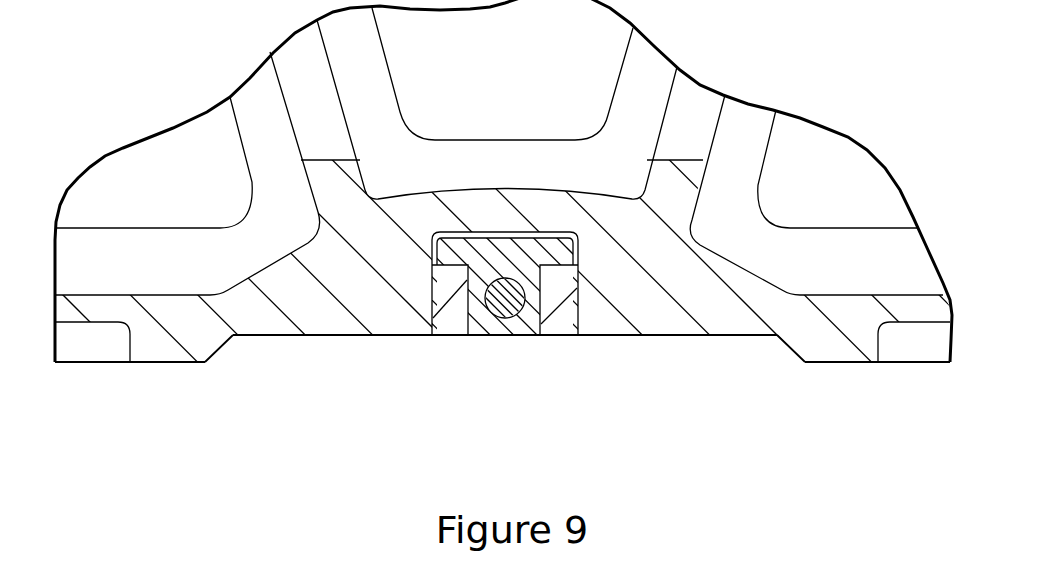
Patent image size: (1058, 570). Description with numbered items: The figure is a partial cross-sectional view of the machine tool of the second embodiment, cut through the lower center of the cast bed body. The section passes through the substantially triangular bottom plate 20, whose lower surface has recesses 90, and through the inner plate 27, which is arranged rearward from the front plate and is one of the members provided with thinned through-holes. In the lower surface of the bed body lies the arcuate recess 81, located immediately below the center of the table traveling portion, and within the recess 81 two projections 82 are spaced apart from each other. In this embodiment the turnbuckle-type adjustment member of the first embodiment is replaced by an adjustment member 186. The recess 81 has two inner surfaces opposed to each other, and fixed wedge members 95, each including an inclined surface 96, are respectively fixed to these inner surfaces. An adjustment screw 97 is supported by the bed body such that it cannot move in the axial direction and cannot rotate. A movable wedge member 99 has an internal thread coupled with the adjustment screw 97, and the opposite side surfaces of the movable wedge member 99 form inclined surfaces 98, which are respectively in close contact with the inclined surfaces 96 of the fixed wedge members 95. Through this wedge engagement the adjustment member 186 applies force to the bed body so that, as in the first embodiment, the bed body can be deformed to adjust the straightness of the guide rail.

The bottom plate 20 is at (167, 363).
The inner plate 27 is at (853, 318).
The recess 81 is at (502, 222).
The projections 82 is at (290, 336).
The recesses 90 is at (932, 322).
The fixed wedge members 95 is at (450, 335).
The inclined surfaces 96 is at (478, 320).
The adjustment screw 97 is at (513, 303).
The inclined surfaces 98 is at (463, 297).
The movable wedge member 99 is at (533, 247).
The adjustment member 186 is at (487, 287).